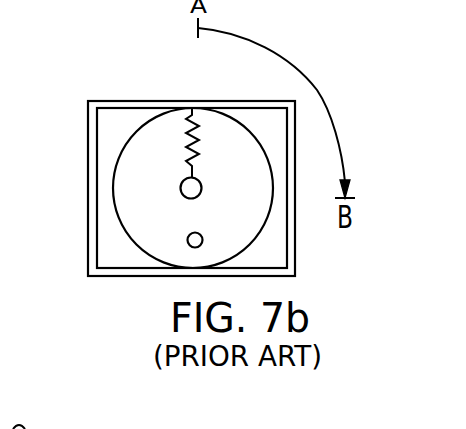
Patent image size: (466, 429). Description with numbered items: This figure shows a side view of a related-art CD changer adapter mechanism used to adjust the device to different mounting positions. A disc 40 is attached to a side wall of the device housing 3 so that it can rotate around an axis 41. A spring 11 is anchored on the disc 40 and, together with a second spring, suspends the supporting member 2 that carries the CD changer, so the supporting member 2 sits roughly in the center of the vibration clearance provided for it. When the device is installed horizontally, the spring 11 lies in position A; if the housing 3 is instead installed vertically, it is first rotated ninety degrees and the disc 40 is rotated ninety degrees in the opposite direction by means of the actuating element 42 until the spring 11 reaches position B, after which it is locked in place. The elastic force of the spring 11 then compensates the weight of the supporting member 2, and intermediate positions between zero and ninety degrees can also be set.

The supporting member 2 is at (122, 108).
The housing 3 is at (158, 101).
The spring 11 is at (195, 108).
The disc 40 is at (120, 156).
The axis 41 is at (182, 194).
The actuating element 42 is at (190, 245).